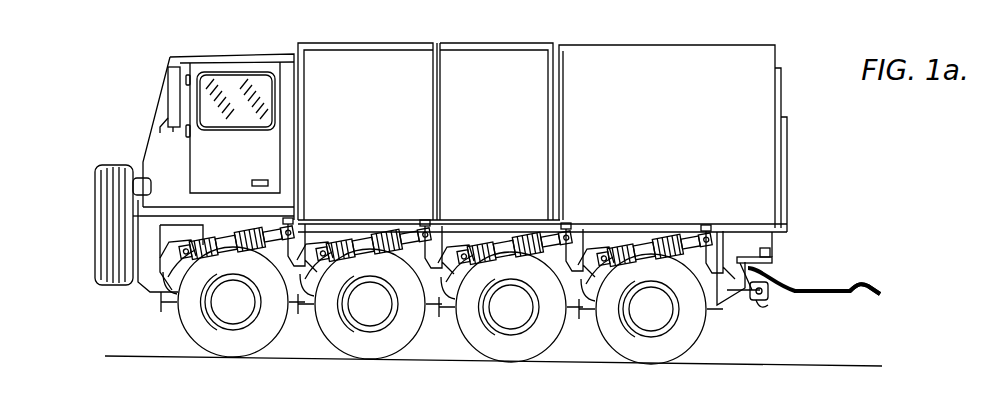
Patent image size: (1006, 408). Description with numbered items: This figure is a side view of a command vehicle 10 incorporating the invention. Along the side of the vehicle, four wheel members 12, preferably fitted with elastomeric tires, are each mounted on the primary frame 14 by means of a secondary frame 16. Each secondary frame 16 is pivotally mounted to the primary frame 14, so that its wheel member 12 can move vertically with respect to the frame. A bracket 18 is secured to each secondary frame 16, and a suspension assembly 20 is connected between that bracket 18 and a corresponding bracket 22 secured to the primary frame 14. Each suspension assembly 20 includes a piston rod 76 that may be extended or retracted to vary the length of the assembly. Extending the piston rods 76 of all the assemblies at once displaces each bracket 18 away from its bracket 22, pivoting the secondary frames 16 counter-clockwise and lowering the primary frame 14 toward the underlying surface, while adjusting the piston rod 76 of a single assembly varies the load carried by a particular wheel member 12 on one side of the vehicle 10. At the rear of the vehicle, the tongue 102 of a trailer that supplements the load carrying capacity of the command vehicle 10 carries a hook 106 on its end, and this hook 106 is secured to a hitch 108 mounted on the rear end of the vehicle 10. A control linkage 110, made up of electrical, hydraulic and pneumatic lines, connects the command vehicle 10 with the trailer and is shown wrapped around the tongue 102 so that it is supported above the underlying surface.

The command vehicle 10 is at (494, 43).
The wheel member 12 is at (235, 345).
The primary frame 14 is at (734, 318).
The secondary frame 16 is at (174, 302).
The bracket 18 is at (165, 270).
The suspension assembly 20 is at (229, 229).
The bracket 22 is at (301, 245).
The piston rod 76 is at (286, 222).
The tongue 102 is at (874, 292).
The hook 106 is at (770, 300).
The hitch 108 is at (764, 303).
The control linkage 110 is at (776, 279).